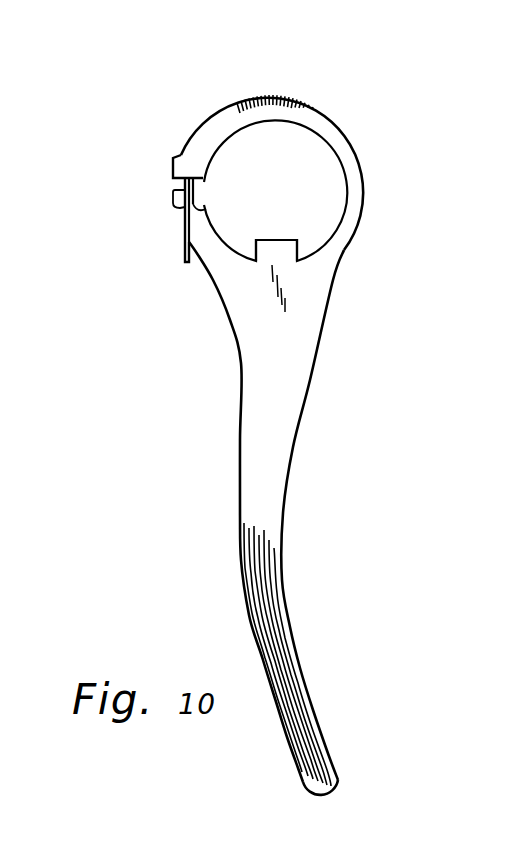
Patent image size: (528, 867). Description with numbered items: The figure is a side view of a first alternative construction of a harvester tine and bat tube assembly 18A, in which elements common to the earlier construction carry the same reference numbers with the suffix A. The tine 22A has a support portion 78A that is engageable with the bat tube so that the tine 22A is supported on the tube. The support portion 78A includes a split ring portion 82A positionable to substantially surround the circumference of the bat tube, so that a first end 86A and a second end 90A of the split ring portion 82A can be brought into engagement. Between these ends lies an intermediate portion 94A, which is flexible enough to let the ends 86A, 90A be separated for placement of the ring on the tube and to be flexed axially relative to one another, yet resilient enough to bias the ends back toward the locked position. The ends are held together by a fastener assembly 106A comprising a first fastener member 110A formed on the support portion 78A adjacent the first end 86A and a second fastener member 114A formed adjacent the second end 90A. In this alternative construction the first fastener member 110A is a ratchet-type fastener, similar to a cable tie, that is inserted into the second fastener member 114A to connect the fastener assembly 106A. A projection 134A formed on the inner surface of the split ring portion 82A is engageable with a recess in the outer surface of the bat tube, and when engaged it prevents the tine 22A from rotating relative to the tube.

The harvester tine and bat tube assembly 18A is at (149, 126).
The tine 22A is at (312, 384).
The support portion 78A is at (376, 206).
The split ring portion 82A is at (296, 100).
The first end 86A is at (183, 148).
The second end 90A is at (174, 196).
The intermediate portion 94A is at (346, 133).
The fastener assembly 106A is at (126, 183).
The first fastener member 110A is at (200, 205).
The second fastener member 114A is at (173, 267).
The projection 134A is at (280, 240).